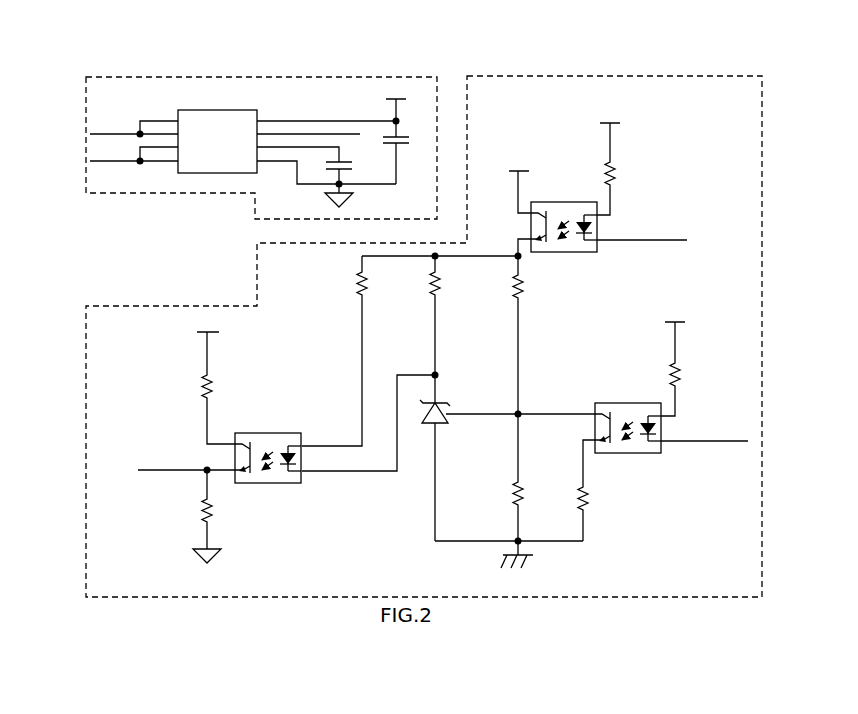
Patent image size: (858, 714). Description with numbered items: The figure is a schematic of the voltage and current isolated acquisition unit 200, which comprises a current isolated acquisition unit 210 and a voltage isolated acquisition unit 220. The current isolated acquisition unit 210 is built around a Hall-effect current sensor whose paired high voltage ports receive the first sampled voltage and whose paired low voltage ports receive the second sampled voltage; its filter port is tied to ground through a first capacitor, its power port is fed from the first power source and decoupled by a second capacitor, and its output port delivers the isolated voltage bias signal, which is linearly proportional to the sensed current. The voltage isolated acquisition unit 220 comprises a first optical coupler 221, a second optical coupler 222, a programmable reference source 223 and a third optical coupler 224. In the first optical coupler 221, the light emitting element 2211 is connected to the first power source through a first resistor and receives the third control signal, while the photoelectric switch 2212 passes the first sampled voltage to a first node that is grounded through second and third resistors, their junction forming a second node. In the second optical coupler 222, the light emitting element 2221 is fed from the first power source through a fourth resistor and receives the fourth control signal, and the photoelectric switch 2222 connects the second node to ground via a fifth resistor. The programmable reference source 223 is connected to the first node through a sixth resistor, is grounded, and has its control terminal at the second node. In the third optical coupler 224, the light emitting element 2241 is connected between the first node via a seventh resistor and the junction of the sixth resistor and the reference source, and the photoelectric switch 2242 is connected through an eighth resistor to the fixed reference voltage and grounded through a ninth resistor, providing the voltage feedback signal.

The voltage and current isolated acquisition unit 200 is at (432, 32).
The current isolated acquisition unit 210 is at (118, 75).
The voltage isolated acquisition unit 220 is at (763, 175).
The first optical coupler 221 is at (591, 256).
The light emitting element 2211 is at (576, 204).
The photoelectric switch 2212 is at (541, 203).
The second optical coupler 222 is at (649, 461).
The light emitting element 2221 is at (636, 420).
The photoelectric switch 2222 is at (606, 419).
The programmable reference source 223 is at (449, 400).
The third optical coupler 224 is at (289, 487).
The light emitting element 2241 is at (278, 439).
The photoelectric switch 2242 is at (244, 439).